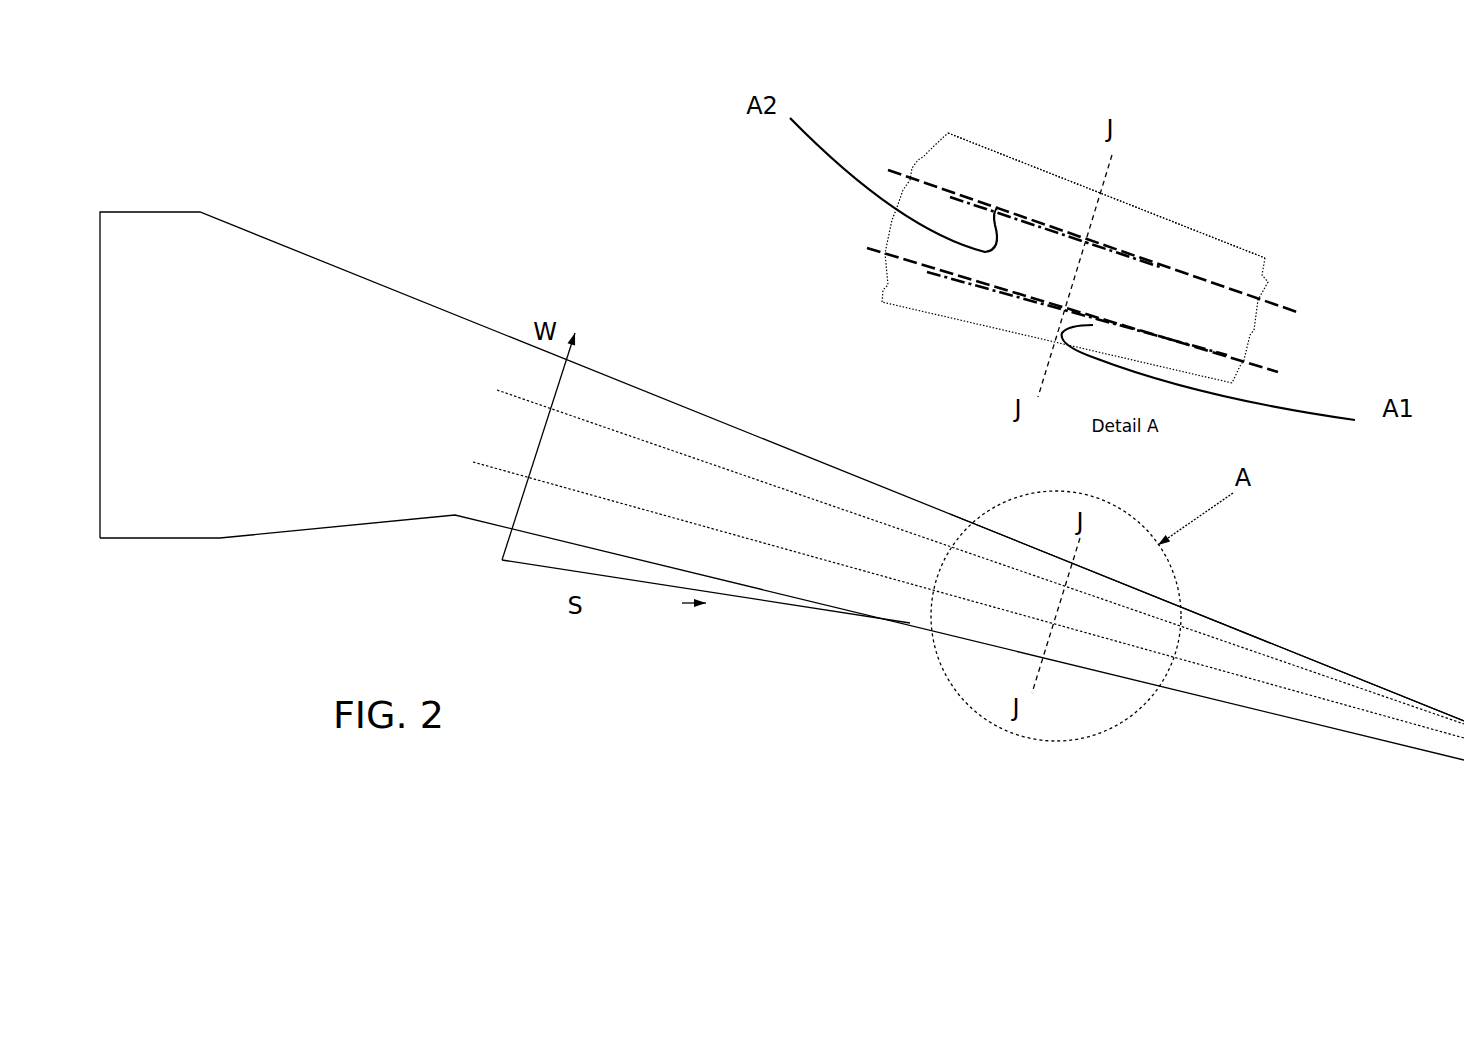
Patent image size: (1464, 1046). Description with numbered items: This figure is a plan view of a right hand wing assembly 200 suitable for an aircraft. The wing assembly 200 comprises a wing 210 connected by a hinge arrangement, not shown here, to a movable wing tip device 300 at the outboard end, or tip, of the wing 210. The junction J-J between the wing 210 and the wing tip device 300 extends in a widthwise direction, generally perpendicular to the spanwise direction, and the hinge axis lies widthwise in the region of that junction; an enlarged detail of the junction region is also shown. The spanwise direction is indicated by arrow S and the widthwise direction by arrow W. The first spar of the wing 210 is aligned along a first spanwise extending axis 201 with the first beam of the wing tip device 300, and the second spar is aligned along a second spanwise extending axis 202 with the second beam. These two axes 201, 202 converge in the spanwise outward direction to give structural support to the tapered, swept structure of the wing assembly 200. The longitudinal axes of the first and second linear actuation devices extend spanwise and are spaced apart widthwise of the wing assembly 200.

The wing assembly 200 is at (703, 368).
The first spanwise extending axis 201 is at (762, 478).
The second spanwise extending axis 202 is at (752, 542).
The wing 210 is at (567, 474).
The wing tip device 300 is at (1222, 630).